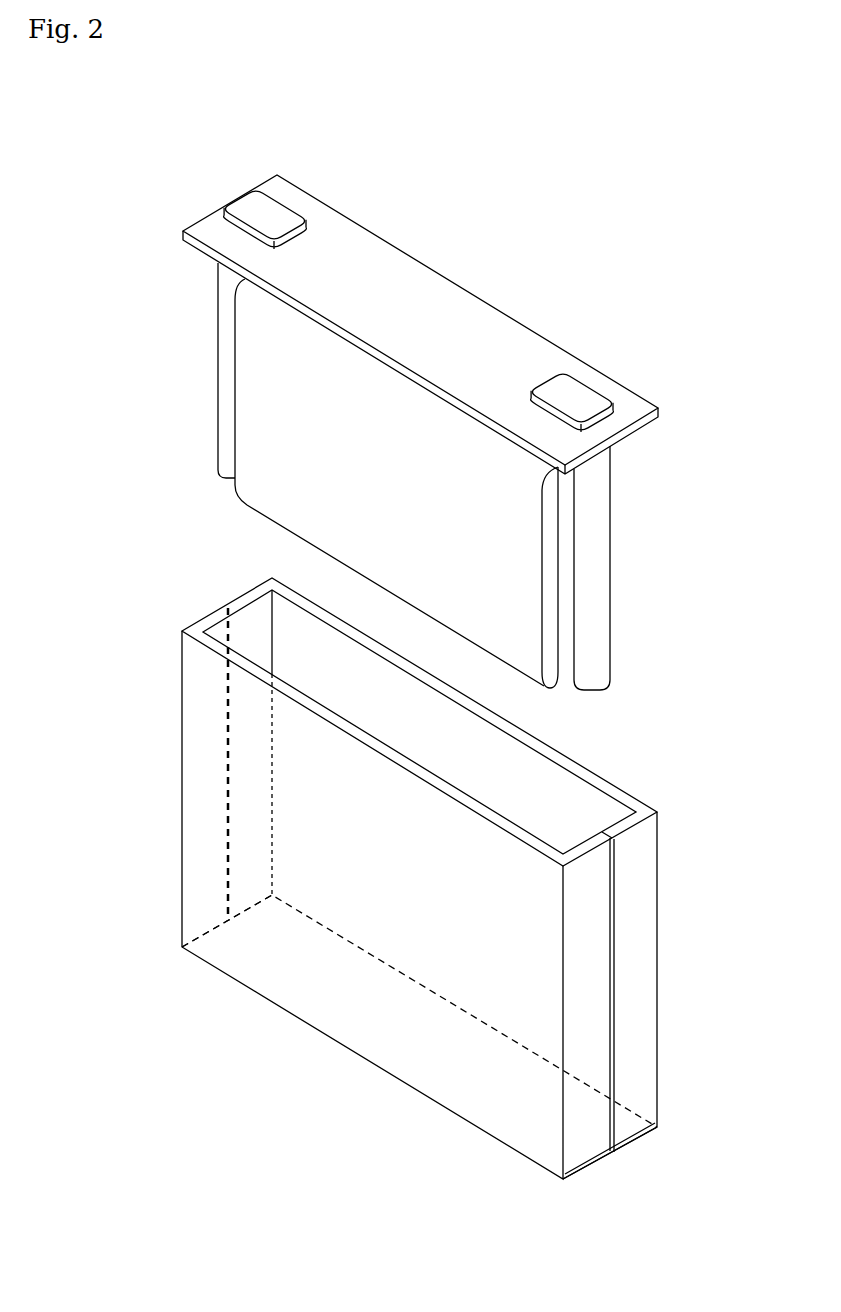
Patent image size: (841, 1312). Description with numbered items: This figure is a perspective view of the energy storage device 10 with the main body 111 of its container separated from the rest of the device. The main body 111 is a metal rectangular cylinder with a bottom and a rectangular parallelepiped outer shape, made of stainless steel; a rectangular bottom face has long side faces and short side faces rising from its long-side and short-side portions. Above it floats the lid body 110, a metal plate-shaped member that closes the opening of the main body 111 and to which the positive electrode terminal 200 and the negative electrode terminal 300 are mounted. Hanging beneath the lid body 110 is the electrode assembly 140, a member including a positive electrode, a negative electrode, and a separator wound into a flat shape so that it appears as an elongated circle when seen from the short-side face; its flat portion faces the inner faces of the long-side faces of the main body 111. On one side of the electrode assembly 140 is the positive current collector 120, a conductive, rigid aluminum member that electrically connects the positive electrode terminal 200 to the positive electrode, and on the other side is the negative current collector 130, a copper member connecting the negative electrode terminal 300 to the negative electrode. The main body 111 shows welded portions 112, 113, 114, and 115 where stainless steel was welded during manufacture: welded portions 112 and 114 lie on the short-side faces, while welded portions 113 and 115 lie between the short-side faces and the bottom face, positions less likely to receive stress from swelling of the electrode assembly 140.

The energy storage device 10 is at (545, 206).
The lid body 110 is at (418, 285).
The positive electrode terminal 200 is at (268, 207).
The negative electrode terminal 300 is at (578, 392).
The positive current collector 120 is at (228, 340).
The negative current collector 130 is at (600, 503).
The electrode assembly 140 is at (415, 486).
The main body 111 is at (600, 775).
The welded portion 112 is at (228, 741).
The welded portion 113 is at (210, 928).
The welded portion 114 is at (613, 1010).
The welded portion 115 is at (637, 1143).